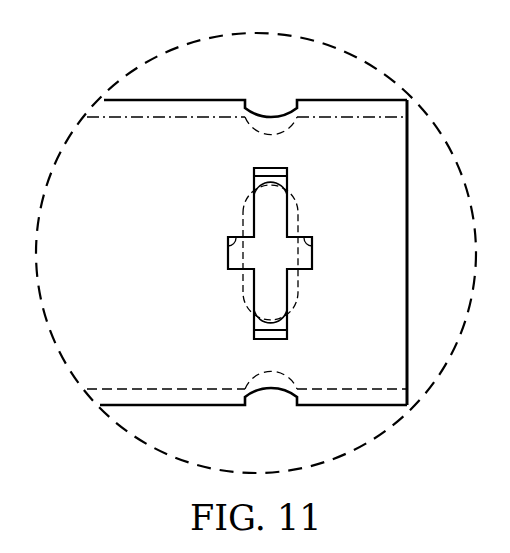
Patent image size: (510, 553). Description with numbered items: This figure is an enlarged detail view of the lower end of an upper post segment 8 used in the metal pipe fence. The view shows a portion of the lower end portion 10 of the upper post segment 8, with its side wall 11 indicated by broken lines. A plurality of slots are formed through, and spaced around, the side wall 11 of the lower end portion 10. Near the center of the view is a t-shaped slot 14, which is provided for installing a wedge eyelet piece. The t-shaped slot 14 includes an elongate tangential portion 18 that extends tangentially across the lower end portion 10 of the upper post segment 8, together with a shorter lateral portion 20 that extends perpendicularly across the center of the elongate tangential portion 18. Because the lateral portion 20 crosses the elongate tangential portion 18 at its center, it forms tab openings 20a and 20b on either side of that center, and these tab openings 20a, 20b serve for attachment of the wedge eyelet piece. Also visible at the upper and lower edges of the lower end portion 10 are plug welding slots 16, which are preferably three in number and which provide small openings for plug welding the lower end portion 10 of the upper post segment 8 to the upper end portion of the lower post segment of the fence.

The upper post segment 8 is at (138, 100).
The lower end portion 10 is at (408, 253).
The side wall 11 is at (160, 118).
The t-shaped slot 14 is at (230, 258).
The plug welding slot 16 is at (270, 116).
The elongate tangential portion 18 is at (292, 215).
The lateral portion 20 is at (304, 270).
The tab opening 20a is at (228, 245).
The tab opening 20b is at (313, 247).